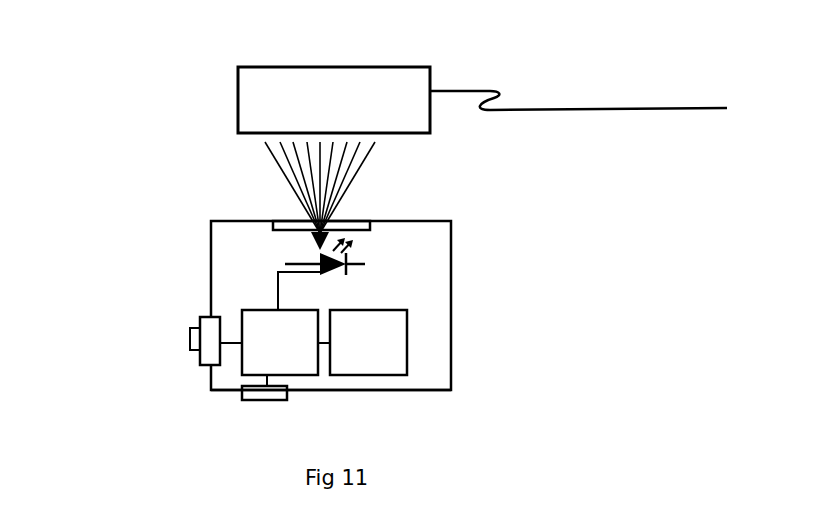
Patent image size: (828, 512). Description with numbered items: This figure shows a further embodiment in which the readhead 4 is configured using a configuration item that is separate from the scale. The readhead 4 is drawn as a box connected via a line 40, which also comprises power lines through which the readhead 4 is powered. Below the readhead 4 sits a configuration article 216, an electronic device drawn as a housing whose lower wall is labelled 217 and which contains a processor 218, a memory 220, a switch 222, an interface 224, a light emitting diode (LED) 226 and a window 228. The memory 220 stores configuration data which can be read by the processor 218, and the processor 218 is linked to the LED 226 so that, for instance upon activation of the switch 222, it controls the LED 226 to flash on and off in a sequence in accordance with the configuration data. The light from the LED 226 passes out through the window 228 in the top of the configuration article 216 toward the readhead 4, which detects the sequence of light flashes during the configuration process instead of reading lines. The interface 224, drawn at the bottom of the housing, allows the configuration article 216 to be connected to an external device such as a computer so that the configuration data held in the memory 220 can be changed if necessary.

The readhead 4 is at (226, 103).
The line 40 is at (631, 96).
The configuration article 216 is at (180, 252).
The housing bottom wall 217 is at (360, 392).
The processor 218 is at (275, 348).
The memory 220 is at (368, 342).
The switch 222 is at (185, 339).
The interface 224 is at (267, 400).
The light emitting diode (LED) 226 is at (362, 258).
The window 228 is at (362, 220).